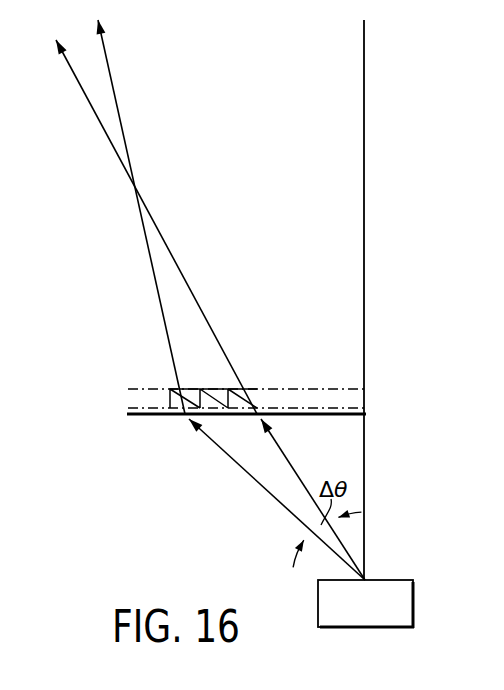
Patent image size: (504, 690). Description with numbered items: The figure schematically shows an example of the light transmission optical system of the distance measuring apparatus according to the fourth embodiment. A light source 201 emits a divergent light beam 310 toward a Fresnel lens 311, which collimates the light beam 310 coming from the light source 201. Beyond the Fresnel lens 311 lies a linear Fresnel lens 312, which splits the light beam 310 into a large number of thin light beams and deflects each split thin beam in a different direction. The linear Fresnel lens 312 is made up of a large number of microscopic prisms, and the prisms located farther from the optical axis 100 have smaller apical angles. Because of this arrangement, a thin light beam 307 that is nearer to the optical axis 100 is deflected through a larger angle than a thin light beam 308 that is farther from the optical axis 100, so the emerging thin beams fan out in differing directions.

The optical axis 100 is at (367, 135).
The light source 201 is at (385, 580).
The thin light beam 307 is at (212, 330).
The thin light beam 308 is at (167, 335).
The light beam 310 is at (255, 483).
The Fresnel lens 311 is at (147, 418).
The linear Fresnel lens 312 is at (170, 398).